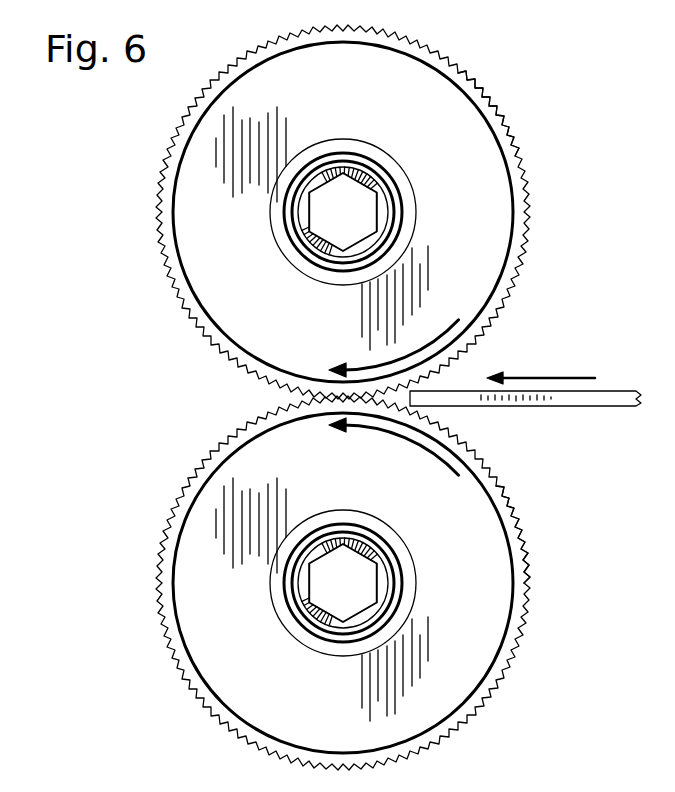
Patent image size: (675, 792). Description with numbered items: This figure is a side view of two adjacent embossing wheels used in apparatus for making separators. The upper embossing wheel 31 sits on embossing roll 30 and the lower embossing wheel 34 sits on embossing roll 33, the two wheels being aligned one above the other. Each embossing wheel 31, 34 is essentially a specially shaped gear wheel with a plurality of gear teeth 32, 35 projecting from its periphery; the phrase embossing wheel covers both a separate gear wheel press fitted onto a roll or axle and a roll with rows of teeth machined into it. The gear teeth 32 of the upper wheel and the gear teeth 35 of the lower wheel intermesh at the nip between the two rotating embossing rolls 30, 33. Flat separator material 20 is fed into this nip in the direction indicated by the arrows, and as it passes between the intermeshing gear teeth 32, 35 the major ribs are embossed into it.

The flat separator material 20 is at (605, 397).
The embossing roll 30 is at (371, 212).
The embossing wheel 31 is at (448, 58).
The gear teeth 32 is at (475, 86).
The embossing roll 33 is at (375, 583).
The embossing wheel 34 is at (470, 463).
The gear teeth 35 is at (505, 500).